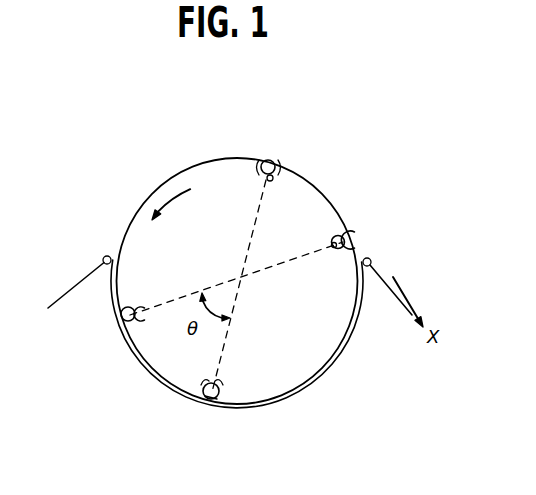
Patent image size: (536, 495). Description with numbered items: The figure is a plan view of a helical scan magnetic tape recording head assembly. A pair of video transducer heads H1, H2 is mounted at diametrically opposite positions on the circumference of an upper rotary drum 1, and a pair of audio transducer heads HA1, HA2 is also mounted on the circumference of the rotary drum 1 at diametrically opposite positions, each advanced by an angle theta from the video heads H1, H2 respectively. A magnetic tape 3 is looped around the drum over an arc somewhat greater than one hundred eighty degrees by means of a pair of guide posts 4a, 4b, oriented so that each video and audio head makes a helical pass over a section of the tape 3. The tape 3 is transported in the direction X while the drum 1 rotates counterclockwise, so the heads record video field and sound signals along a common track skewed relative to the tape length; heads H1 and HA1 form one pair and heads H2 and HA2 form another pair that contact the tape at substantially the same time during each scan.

The upper rotary drum 1 is at (213, 158).
The magnetic tape 3 is at (84, 280).
The guide post 4a is at (105, 266).
The guide post 4b is at (368, 267).
The video transducer head H1 is at (130, 325).
The video transducer head H2 is at (348, 232).
The audio transducer head HA1 is at (227, 402).
The audio transducer head HA2 is at (267, 158).